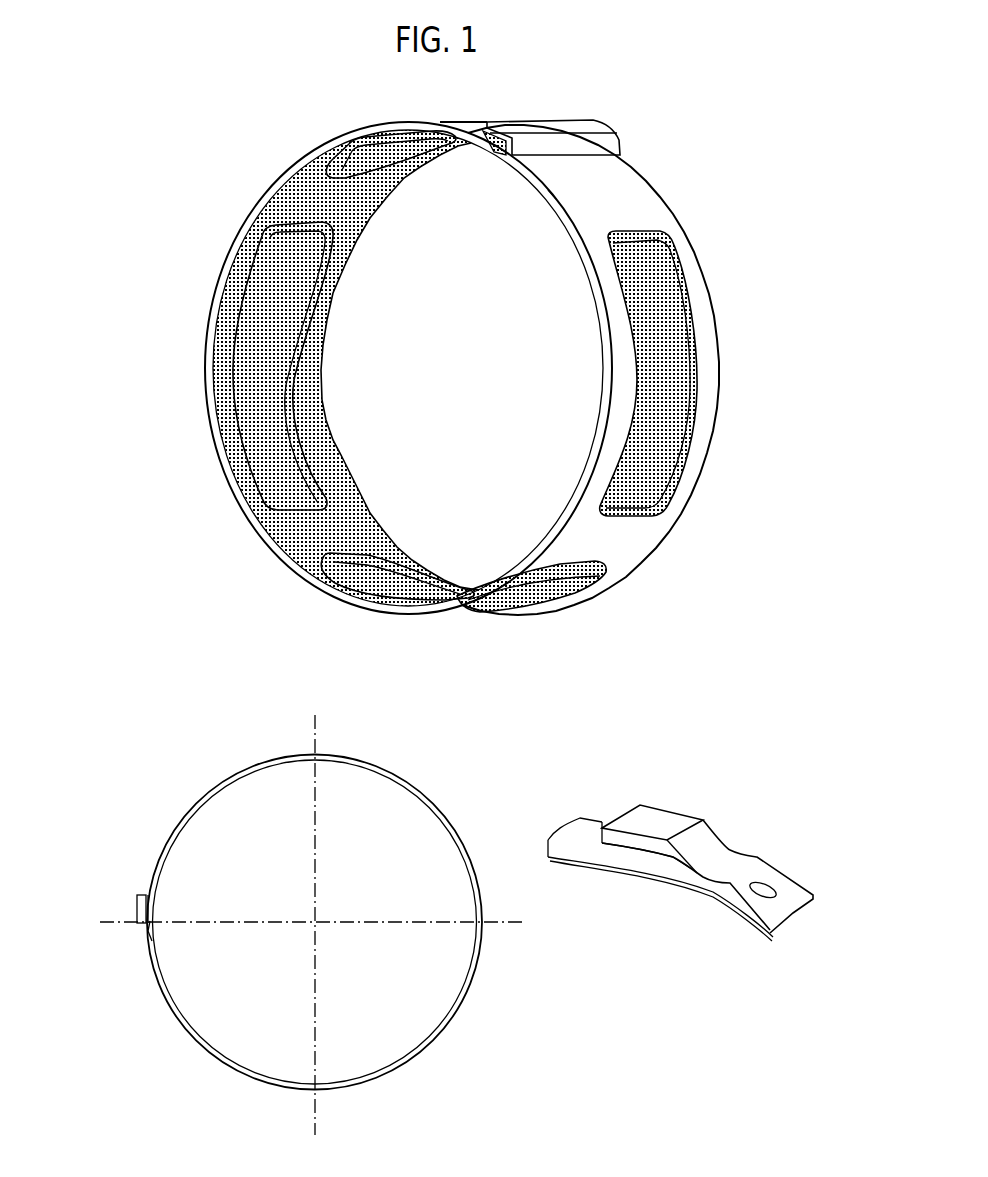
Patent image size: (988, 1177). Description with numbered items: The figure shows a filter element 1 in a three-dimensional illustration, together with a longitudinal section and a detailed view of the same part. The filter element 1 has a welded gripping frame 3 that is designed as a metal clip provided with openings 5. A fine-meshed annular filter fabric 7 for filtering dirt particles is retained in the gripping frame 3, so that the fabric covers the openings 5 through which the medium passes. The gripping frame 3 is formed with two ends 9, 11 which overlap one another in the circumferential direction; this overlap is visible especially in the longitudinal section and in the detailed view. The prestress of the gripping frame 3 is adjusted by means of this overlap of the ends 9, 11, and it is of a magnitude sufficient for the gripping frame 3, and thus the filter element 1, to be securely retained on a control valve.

The filter element 1 is at (694, 172).
The gripping frame 3 is at (608, 544).
The openings 5 is at (675, 332).
The annular filter fabric 7 is at (668, 385).
The end 9 is at (491, 158).
The end 11 is at (516, 128).